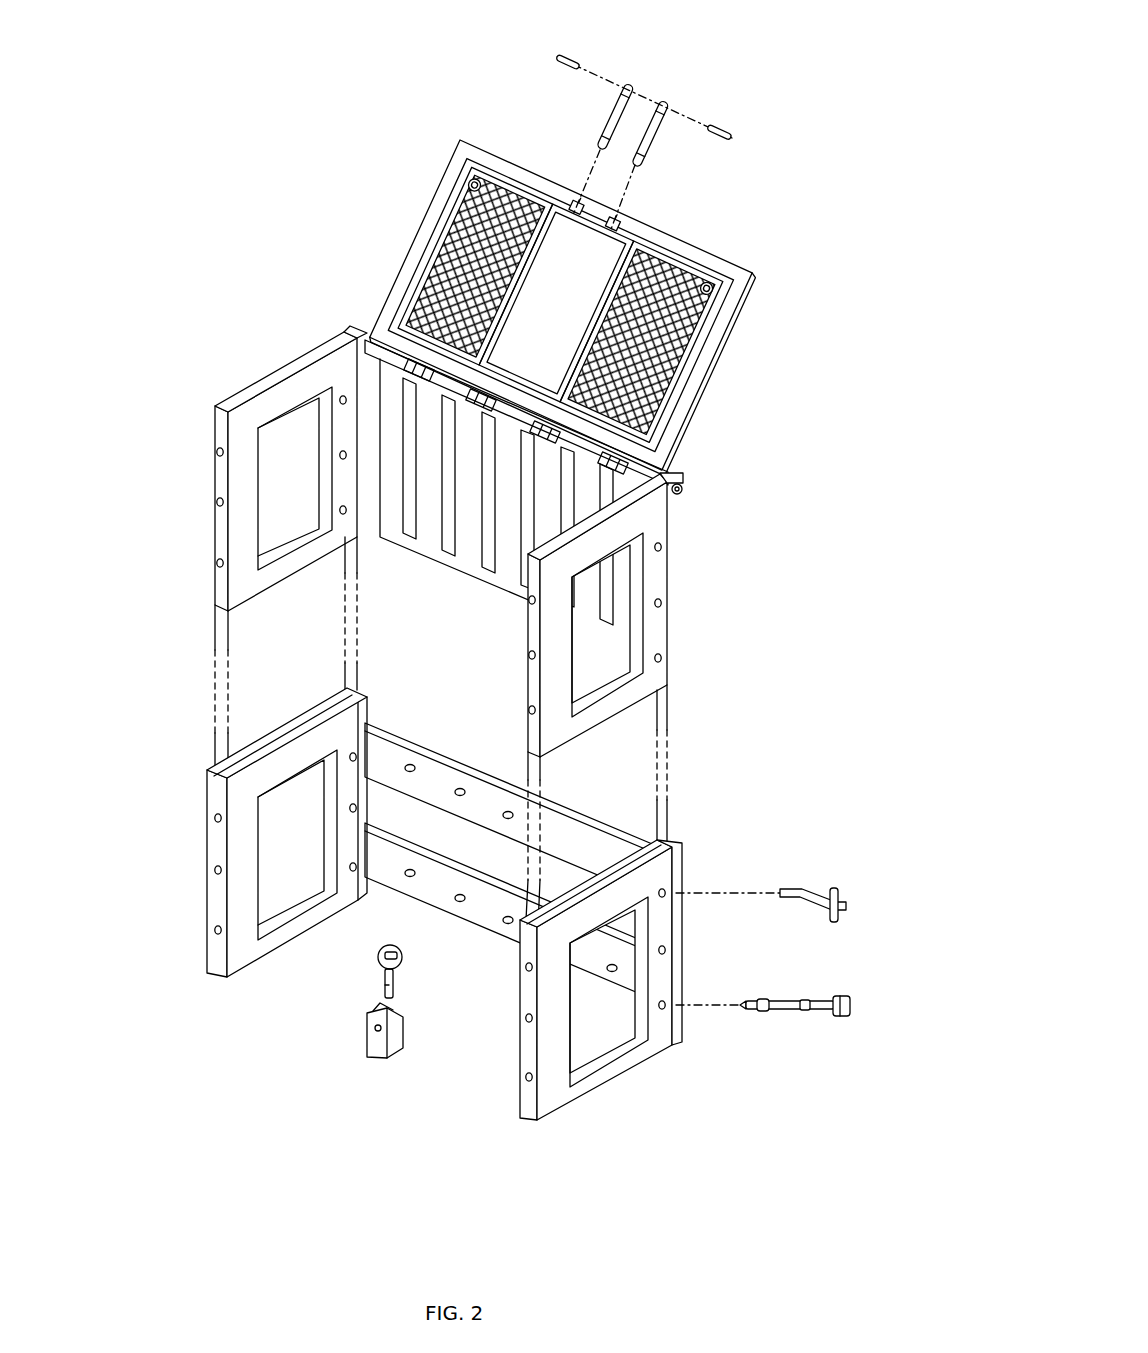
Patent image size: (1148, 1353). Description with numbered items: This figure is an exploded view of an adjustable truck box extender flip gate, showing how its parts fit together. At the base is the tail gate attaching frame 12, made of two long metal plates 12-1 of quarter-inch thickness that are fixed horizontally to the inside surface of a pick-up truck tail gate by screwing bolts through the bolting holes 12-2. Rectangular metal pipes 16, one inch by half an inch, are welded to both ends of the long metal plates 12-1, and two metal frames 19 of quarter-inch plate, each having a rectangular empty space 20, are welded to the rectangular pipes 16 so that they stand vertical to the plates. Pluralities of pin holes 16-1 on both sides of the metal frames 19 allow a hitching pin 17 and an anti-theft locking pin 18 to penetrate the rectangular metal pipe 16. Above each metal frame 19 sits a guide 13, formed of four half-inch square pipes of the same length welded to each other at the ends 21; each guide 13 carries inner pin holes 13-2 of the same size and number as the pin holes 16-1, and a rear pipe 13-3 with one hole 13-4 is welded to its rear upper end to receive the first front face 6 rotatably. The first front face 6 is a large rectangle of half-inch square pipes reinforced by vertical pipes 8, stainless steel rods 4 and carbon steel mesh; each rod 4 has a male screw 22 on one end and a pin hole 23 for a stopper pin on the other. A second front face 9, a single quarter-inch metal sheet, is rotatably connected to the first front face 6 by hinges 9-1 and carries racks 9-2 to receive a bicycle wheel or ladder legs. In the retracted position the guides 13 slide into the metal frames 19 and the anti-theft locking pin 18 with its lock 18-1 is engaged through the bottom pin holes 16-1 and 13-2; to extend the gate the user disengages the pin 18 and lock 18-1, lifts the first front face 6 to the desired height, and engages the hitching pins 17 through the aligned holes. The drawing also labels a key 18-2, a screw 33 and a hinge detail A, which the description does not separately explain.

The stainless steel rod 4 is at (652, 135).
The first front face 6 is at (562, 259).
The vertical pipe 8 is at (556, 303).
The second front face 9 is at (516, 498).
The hinge 9-1 is at (503, 385).
The rack 9-2 is at (448, 552).
The tail gate attaching frame 12 is at (511, 821).
The long metal plate 12-1 is at (483, 793).
The bolting hole 12-2 is at (465, 902).
The guide 13 is at (273, 546).
The inner pin hole 13-2 is at (664, 693).
The rear pipe 13-3 is at (684, 486).
The hole 13-4 is at (684, 491).
The rectangular metal pipe 16 is at (574, 964).
The pin hole 16-1 is at (668, 950).
The hitching pin 17 is at (847, 897).
The anti-theft locking pin 18 is at (852, 1005).
The lock 18-1 is at (368, 1030).
The key 18-2 is at (378, 957).
The metal frame 19 is at (231, 832).
The rectangular empty space 20 is at (270, 882).
The end 21 is at (362, 332).
The male screw 22 is at (640, 163).
The pin hole 23 is at (670, 95).
The screw 33 is at (475, 185).
The hinge knuckle A is at (596, 213).